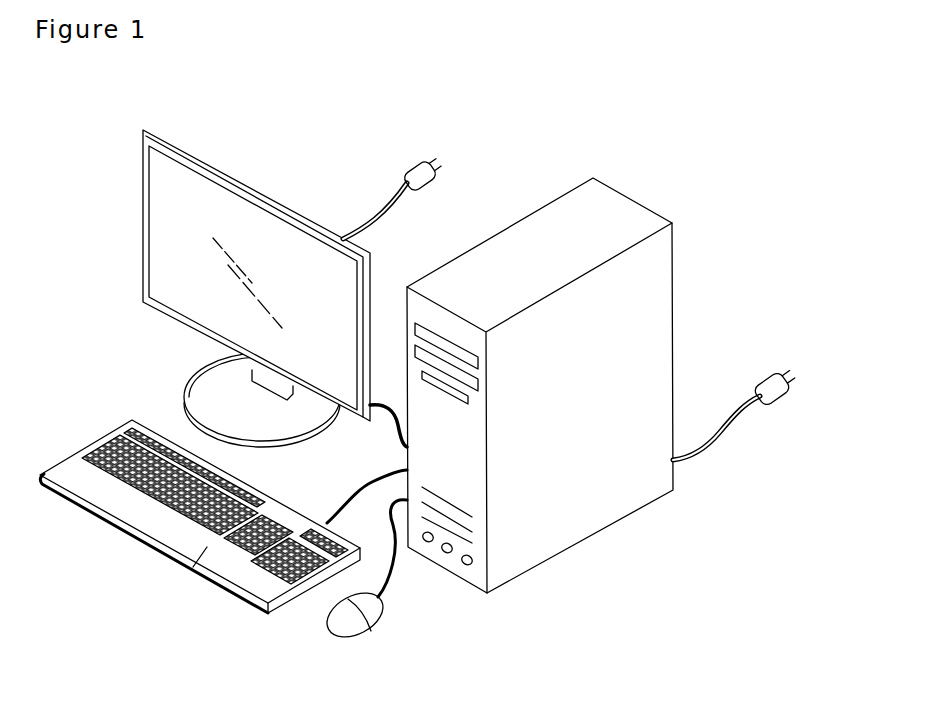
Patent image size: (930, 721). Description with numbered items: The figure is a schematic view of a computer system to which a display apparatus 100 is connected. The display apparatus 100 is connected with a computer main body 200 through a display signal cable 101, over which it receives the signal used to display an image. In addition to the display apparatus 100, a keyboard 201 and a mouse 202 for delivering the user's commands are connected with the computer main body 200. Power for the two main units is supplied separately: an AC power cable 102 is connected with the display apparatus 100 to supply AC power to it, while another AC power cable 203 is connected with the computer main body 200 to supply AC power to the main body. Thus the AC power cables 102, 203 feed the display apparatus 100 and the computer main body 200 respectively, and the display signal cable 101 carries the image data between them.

The display apparatus 100 is at (143, 182).
The display signal cable 101 is at (388, 424).
The AC power cable 102 is at (371, 206).
The computer main body 200 is at (672, 262).
The keyboard 201 is at (150, 540).
The mouse 202 is at (370, 630).
The AC power cable 203 is at (711, 450).